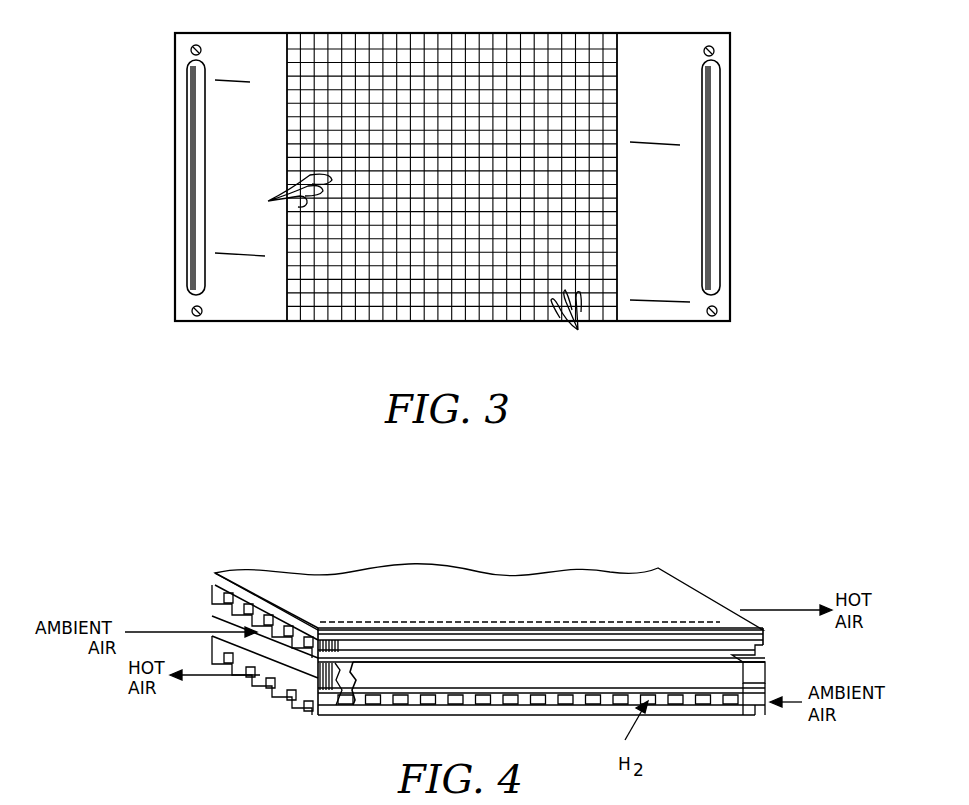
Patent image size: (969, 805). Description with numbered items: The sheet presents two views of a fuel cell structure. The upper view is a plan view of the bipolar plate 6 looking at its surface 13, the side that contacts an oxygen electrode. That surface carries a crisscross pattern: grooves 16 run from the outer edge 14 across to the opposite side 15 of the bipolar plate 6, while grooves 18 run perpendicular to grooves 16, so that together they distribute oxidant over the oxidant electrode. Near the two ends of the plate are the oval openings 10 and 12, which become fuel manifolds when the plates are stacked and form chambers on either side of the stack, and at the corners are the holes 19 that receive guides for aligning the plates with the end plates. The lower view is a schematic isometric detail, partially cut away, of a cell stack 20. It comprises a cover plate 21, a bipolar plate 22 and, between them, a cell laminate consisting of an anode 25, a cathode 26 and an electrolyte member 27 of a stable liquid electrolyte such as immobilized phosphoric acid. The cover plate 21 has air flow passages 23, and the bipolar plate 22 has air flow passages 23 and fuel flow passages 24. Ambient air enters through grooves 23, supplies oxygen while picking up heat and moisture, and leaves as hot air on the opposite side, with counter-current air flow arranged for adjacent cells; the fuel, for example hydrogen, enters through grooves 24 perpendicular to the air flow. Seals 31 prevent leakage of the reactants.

In FIG. 3, the bipolar plate 6 is at (733, 321).
In FIG. 3, the oval opening 10 is at (712, 180).
In FIG. 3, the oval opening 12 is at (196, 103).
In FIG. 3, the surface 13 is at (722, 241).
In FIG. 3, the outer edge 14 is at (430, 322).
In FIG. 3, the opposite side 15 is at (508, 33).
In FIG. 3, the grooves 16 is at (576, 317).
In FIG. 3, the grooves 18 is at (289, 193).
In FIG. 3, the holes 19 is at (201, 50).
In FIG. 4, the cell stack 20 is at (706, 595).
In FIG. 4, the cover plate 21 is at (622, 580).
In FIG. 4, the bipolar plate 22 is at (332, 708).
In FIG. 4, the air flow passages 23 is at (236, 623).
In FIG. 4, the fuel flow passages 24 is at (512, 700).
In FIG. 4, the anode 25 is at (740, 695).
In FIG. 4, the cathode 26 is at (740, 660).
In FIG. 4, the electrolyte member 27 is at (743, 677).
In FIG. 4, the seals 31 is at (323, 712).